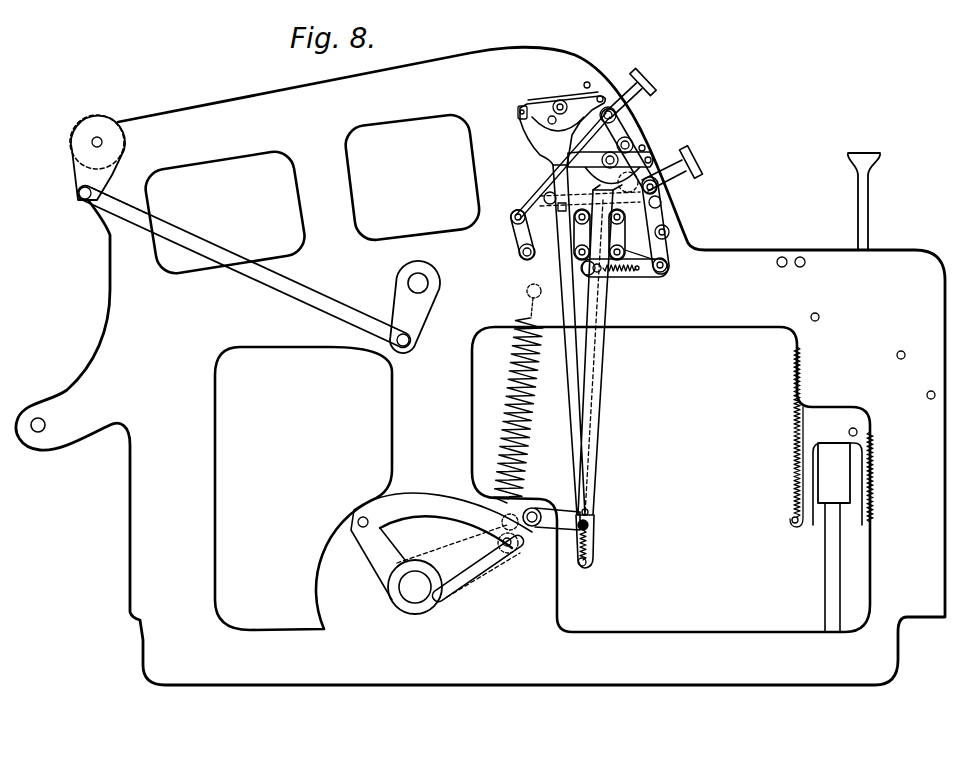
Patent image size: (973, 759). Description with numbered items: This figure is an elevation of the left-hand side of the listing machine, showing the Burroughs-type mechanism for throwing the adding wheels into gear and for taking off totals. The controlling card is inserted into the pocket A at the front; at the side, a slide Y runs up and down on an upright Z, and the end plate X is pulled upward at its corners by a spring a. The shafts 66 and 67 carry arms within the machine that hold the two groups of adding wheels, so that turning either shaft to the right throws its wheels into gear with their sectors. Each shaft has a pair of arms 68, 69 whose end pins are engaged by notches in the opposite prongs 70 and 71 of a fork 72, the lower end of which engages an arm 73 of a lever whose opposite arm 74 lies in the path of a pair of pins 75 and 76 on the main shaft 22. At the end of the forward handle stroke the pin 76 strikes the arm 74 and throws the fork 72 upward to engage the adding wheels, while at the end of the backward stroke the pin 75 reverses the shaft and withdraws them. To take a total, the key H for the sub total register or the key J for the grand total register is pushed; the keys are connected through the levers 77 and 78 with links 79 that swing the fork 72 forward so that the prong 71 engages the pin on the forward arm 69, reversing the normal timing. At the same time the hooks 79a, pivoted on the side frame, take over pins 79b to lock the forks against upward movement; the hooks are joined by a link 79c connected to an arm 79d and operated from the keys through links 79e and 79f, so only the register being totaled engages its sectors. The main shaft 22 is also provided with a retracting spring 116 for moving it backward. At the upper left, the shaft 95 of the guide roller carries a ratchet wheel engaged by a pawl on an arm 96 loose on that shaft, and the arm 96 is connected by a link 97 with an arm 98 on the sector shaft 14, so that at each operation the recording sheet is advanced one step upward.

The shaft 95 is at (95, 140).
The arm 96 is at (108, 186).
The link 97 is at (210, 247).
The arm 98 is at (408, 292).
The sector shaft 14 is at (425, 275).
The arm 68 is at (528, 106).
The shaft 66 is at (559, 103).
The forward arm 69 is at (582, 97).
The prong 70 is at (532, 126).
The prong 71 is at (624, 127).
The key J is at (652, 86).
The shaft 67 is at (608, 157).
The link 79f is at (553, 182).
The link 79e is at (662, 158).
The key H is at (720, 138).
The link 79c is at (530, 205).
The lever 77 is at (668, 207).
The pin 79b is at (683, 217).
The arm 79d is at (520, 250).
The lever 78 is at (672, 247).
The fork 72 is at (558, 268).
The hook 79a is at (658, 244).
The link 79 is at (643, 270).
The retracting spring 116 is at (530, 392).
The arm 74 is at (498, 513).
The pin 76 is at (362, 528).
The pin 75 is at (480, 565).
The main shaft 22 is at (413, 596).
The arm 73 is at (576, 560).
The pocket A is at (862, 197).
The spring a is at (793, 437).
The end plate X is at (837, 469).
The slide Y is at (823, 472).
The upright Z is at (833, 546).